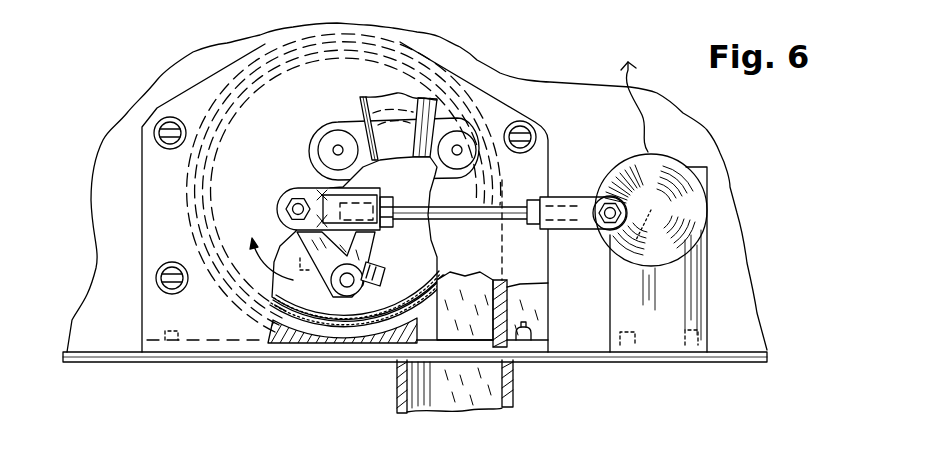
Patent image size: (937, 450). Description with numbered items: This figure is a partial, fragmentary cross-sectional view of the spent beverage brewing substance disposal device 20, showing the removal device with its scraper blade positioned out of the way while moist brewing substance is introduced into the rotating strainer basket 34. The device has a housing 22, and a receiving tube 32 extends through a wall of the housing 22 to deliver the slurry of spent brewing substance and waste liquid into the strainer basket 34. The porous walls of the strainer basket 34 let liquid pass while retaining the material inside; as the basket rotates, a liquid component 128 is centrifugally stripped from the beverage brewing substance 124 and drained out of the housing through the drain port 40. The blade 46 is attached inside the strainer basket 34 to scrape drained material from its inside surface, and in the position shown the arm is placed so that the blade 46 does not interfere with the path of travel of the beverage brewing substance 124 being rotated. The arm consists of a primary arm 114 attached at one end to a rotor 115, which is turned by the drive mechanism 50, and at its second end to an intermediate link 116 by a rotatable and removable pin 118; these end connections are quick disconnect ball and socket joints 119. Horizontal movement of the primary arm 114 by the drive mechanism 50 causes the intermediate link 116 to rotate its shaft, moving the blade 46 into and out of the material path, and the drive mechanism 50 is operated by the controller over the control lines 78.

The spent beverage brewing substance disposal device 20 is at (554, 76).
The housing 22 is at (178, 92).
The receiving tube 32 is at (360, 106).
The strainer basket 34 is at (450, 295).
The drain port 40 is at (397, 388).
The blade 46 is at (380, 268).
The drive mechanism 50 is at (660, 227).
The control lines 78 is at (637, 77).
The primary arm 114 is at (521, 196).
The rotor 115 is at (637, 163).
The intermediate link 116 is at (278, 222).
The rotatable and removable pin 118 is at (302, 194).
The quick disconnect ball and socket joints 119 is at (603, 235).
The beverage brewing substance 124 is at (493, 317).
The liquid component 128 is at (490, 383).